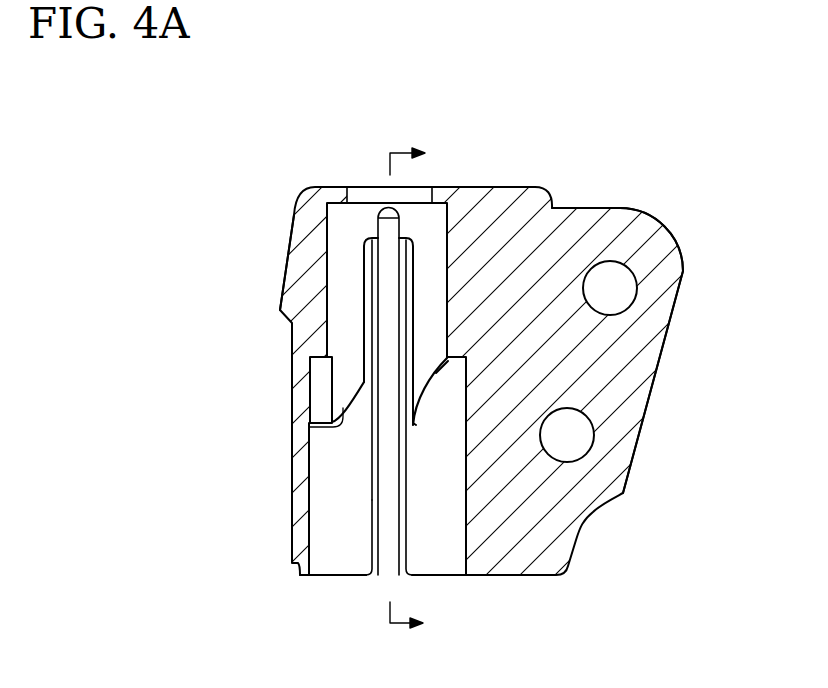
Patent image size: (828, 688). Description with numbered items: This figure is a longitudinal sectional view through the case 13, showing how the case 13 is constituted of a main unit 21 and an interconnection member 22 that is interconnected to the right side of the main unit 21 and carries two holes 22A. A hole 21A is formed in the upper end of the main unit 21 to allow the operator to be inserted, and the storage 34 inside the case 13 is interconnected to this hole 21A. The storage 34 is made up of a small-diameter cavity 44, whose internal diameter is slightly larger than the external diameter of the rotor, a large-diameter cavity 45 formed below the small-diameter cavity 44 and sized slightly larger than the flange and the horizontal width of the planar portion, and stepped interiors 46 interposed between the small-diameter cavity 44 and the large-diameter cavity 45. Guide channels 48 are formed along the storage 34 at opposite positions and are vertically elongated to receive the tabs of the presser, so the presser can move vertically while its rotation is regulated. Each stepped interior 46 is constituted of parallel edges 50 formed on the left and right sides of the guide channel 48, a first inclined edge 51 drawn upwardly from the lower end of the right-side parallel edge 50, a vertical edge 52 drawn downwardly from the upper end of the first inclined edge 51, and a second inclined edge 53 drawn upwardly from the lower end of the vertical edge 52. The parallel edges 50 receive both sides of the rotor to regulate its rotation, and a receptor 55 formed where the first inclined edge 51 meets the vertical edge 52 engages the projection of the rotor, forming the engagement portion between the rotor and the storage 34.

The case 13 is at (544, 149).
The main unit 21 is at (300, 229).
The hole 21A is at (428, 198).
The interconnection member 22 is at (414, 375).
The holes 22A is at (632, 289).
The storage 34 is at (320, 578).
The small-diameter cavity 44 is at (340, 266).
The large-diameter cavity 45 is at (310, 500).
The stepped interiors 46 is at (274, 406).
The guide channels 48 is at (373, 552).
The parallel edges 50 is at (366, 320).
The first inclined edge 51 is at (425, 392).
The vertical edge 52 is at (320, 393).
The second inclined edge 53 is at (333, 430).
The receptor 55 is at (310, 373).